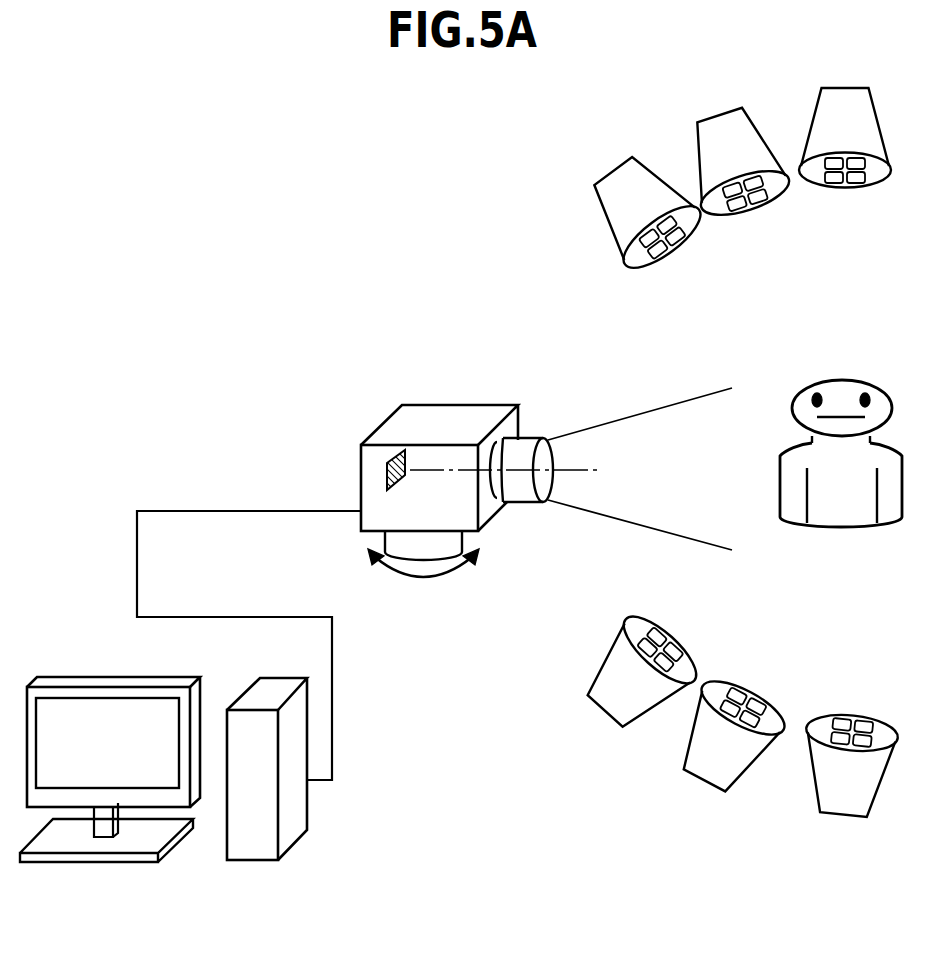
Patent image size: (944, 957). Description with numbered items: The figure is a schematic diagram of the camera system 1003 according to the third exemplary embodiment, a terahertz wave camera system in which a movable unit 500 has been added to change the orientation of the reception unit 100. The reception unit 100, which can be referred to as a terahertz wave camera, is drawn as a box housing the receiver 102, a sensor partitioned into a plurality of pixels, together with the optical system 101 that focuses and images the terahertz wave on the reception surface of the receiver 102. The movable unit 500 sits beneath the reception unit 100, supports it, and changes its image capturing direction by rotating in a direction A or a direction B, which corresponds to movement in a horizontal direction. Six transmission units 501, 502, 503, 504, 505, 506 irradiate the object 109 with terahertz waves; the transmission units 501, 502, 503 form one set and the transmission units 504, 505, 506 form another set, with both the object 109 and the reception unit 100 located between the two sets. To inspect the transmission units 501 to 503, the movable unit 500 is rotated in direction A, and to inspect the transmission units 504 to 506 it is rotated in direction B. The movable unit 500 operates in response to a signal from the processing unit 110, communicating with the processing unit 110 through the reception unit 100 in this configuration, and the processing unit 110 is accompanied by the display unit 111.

The camera system 1003 is at (398, 242).
The reception unit 100 is at (438, 415).
The optical system 101 is at (525, 447).
The receiver 102 is at (387, 464).
The object 109 is at (845, 378).
The processing unit 110 is at (292, 830).
The display unit 111 is at (170, 767).
The movable unit 500 is at (410, 551).
The transmission unit 501 is at (620, 190).
The transmission unit 502 is at (725, 137).
The transmission unit 503 is at (845, 108).
The transmission unit 504 is at (846, 790).
The transmission unit 505 is at (707, 762).
The transmission unit 506 is at (613, 700).